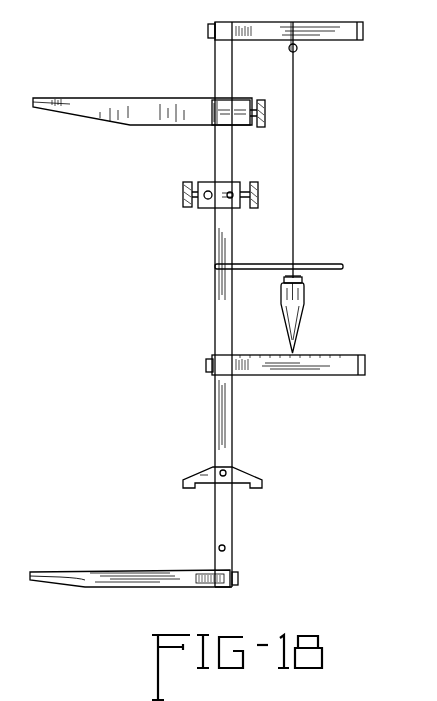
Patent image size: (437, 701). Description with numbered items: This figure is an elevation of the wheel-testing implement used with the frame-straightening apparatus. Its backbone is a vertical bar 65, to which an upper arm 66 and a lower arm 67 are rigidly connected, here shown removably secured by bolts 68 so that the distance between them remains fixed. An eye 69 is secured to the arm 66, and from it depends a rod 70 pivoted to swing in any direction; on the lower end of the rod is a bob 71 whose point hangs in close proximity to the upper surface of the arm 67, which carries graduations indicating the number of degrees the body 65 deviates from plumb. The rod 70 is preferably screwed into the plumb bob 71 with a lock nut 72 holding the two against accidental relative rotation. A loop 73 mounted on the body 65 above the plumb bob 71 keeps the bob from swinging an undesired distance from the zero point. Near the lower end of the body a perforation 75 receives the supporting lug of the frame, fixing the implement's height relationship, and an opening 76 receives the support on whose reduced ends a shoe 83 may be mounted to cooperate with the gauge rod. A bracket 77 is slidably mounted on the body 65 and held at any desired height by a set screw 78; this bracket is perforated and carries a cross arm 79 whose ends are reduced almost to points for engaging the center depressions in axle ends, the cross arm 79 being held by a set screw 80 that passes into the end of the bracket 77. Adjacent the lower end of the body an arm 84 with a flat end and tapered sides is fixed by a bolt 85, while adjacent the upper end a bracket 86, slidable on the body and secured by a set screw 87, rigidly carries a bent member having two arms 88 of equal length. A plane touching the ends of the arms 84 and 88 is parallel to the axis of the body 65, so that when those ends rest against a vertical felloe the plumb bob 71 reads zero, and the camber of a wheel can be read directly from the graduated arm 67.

The bar 65 is at (232, 427).
The arm 66 is at (363, 32).
The arm 67 is at (366, 364).
The bolts 68 is at (208, 30).
The eye 69 is at (297, 44).
The rod 70 is at (296, 150).
The bob 71 is at (300, 315).
The plumb bob cap 72 is at (303, 282).
The loop 73 is at (318, 264).
The perforation 75 is at (226, 549).
The opening 76 is at (227, 478).
The bracket 77 is at (236, 208).
The set screw 78 is at (254, 190).
The cross arm 79 is at (208, 199).
The set screw 80 is at (183, 190).
The shoe 83 is at (240, 476).
The arm 84 is at (93, 577).
The bolt 85 is at (240, 580).
The bracket 86 is at (236, 100).
The set screw 87 is at (259, 104).
The arms 88 is at (141, 106).